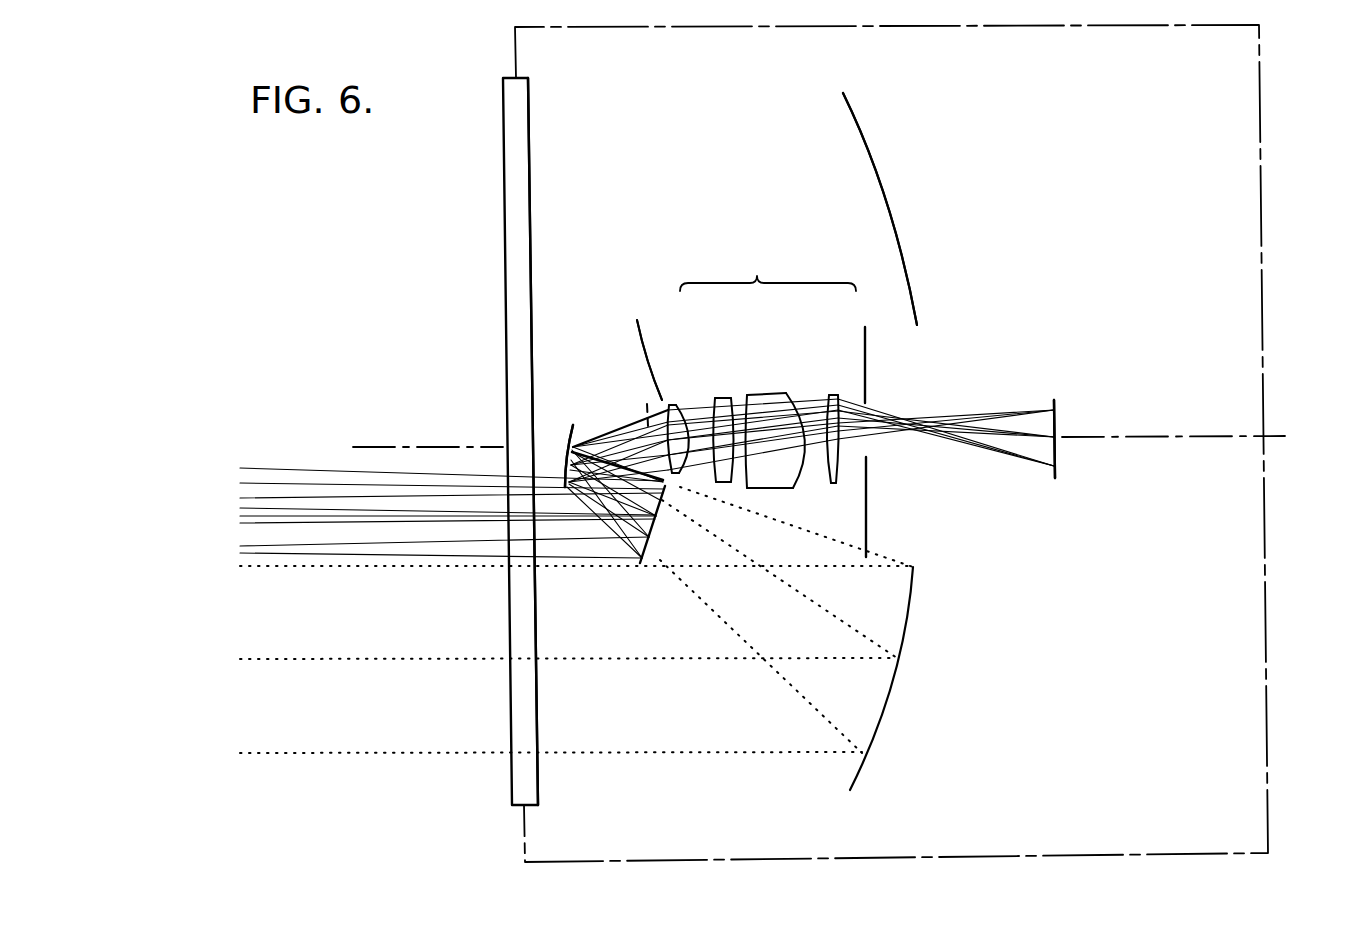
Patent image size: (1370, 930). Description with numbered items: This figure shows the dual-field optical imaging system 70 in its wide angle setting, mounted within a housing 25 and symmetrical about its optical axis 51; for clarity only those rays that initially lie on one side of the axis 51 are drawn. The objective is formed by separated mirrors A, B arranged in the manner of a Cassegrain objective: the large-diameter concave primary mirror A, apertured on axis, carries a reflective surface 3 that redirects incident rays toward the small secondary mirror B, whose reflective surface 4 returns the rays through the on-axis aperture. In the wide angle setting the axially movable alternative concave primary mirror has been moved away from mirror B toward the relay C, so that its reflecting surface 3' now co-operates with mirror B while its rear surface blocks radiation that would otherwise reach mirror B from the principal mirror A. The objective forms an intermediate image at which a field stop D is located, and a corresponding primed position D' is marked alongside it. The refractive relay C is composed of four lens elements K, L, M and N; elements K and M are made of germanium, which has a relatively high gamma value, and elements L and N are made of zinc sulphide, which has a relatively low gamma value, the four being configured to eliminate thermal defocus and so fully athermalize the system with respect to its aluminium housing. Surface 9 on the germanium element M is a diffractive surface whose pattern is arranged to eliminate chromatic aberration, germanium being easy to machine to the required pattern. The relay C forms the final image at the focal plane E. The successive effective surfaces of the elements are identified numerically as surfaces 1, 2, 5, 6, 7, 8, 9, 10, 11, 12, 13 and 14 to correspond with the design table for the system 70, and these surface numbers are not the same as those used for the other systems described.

The effective surface 1 is at (503, 118).
The effective surface 2 is at (529, 136).
The reflective surface 3 is at (853, 441).
The reflecting surface 3' is at (619, 345).
The reflective surface 4 is at (574, 422).
The effective surface 5 is at (668, 452).
The effective surface 6 is at (685, 468).
The effective surface 7 is at (714, 398).
The effective surface 8 is at (732, 476).
The diffractive surface 9 is at (741, 394).
The effective surface 10 is at (798, 478).
The effective surface 11 is at (830, 394).
The effective surface 12 is at (847, 478).
The effective surface 13 is at (869, 455).
The effective surface 14 is at (1058, 420).
The housing 25 is at (1266, 88).
The optical axis 51 is at (380, 447).
The optical imaging system 70 is at (1028, 197).
The primary mirror A is at (840, 86).
The secondary mirror B is at (559, 386).
The relay C is at (768, 268).
The field stop D is at (628, 390).
The plane D' is at (646, 319).
The focal plane E is at (1055, 390).
The lens element K is at (692, 424).
The lens element L is at (724, 428).
The lens element M is at (789, 419).
The lens element N is at (833, 421).